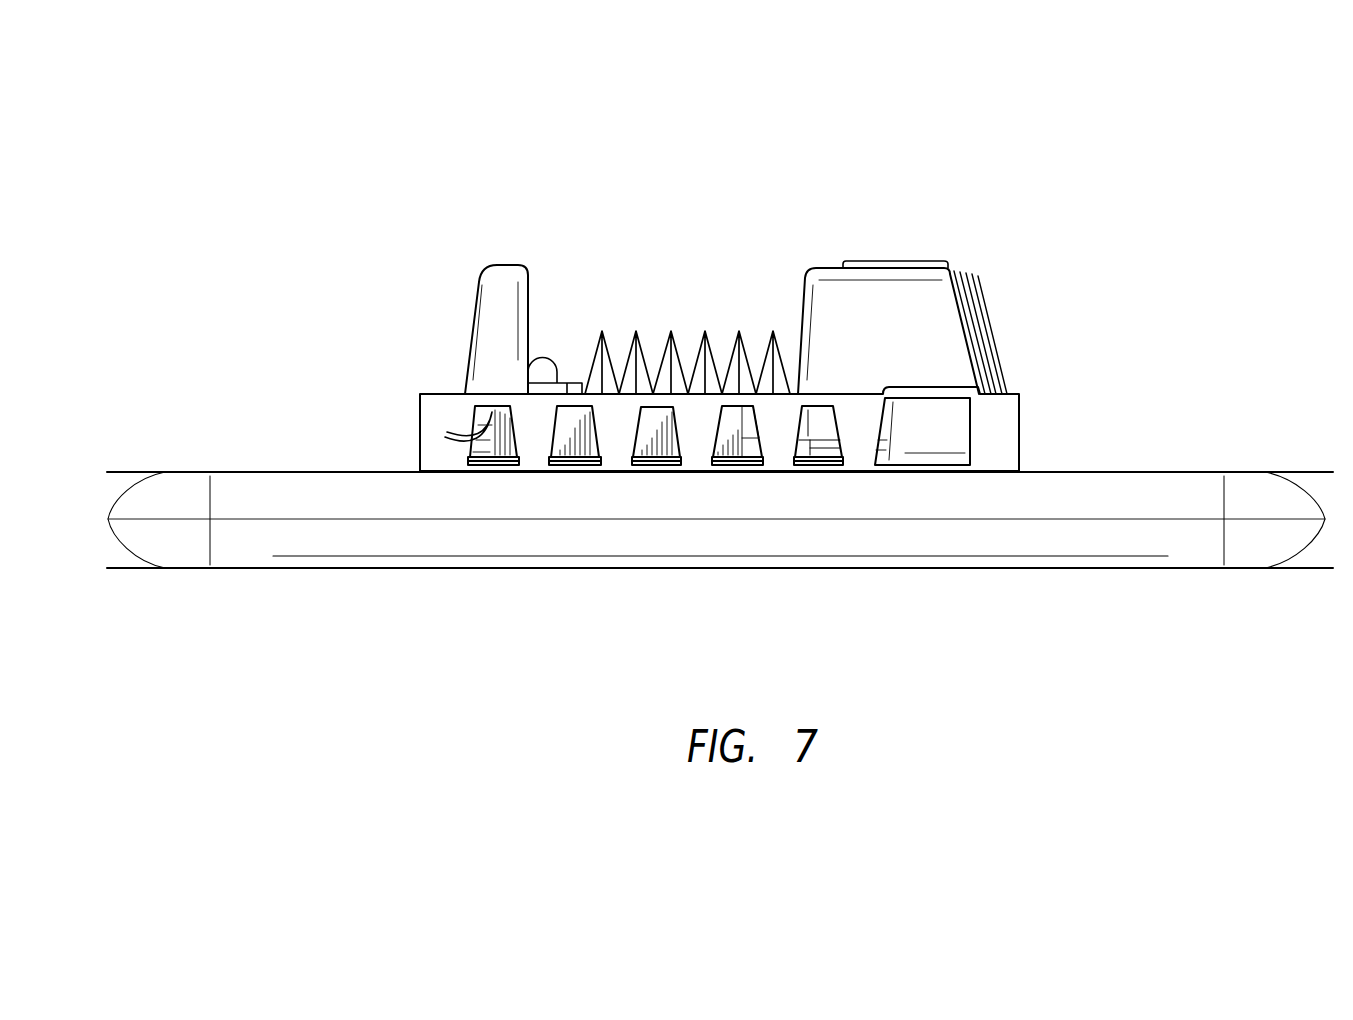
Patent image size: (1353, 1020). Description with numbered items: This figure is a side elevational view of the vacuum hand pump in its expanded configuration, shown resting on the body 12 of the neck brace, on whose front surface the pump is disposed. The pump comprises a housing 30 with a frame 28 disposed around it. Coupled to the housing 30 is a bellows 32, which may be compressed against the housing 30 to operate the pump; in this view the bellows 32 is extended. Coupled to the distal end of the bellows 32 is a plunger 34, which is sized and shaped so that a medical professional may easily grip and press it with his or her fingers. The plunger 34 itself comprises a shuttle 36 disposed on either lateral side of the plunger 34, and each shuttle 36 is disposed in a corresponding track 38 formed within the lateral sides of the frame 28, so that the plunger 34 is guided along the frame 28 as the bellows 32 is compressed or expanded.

The body 12 is at (1113, 507).
The frame 28 is at (415, 437).
The housing 30 is at (925, 315).
The bellows 32 is at (678, 348).
The plunger 34 is at (510, 280).
The shuttle 36 is at (580, 442).
The track 38 is at (783, 443).